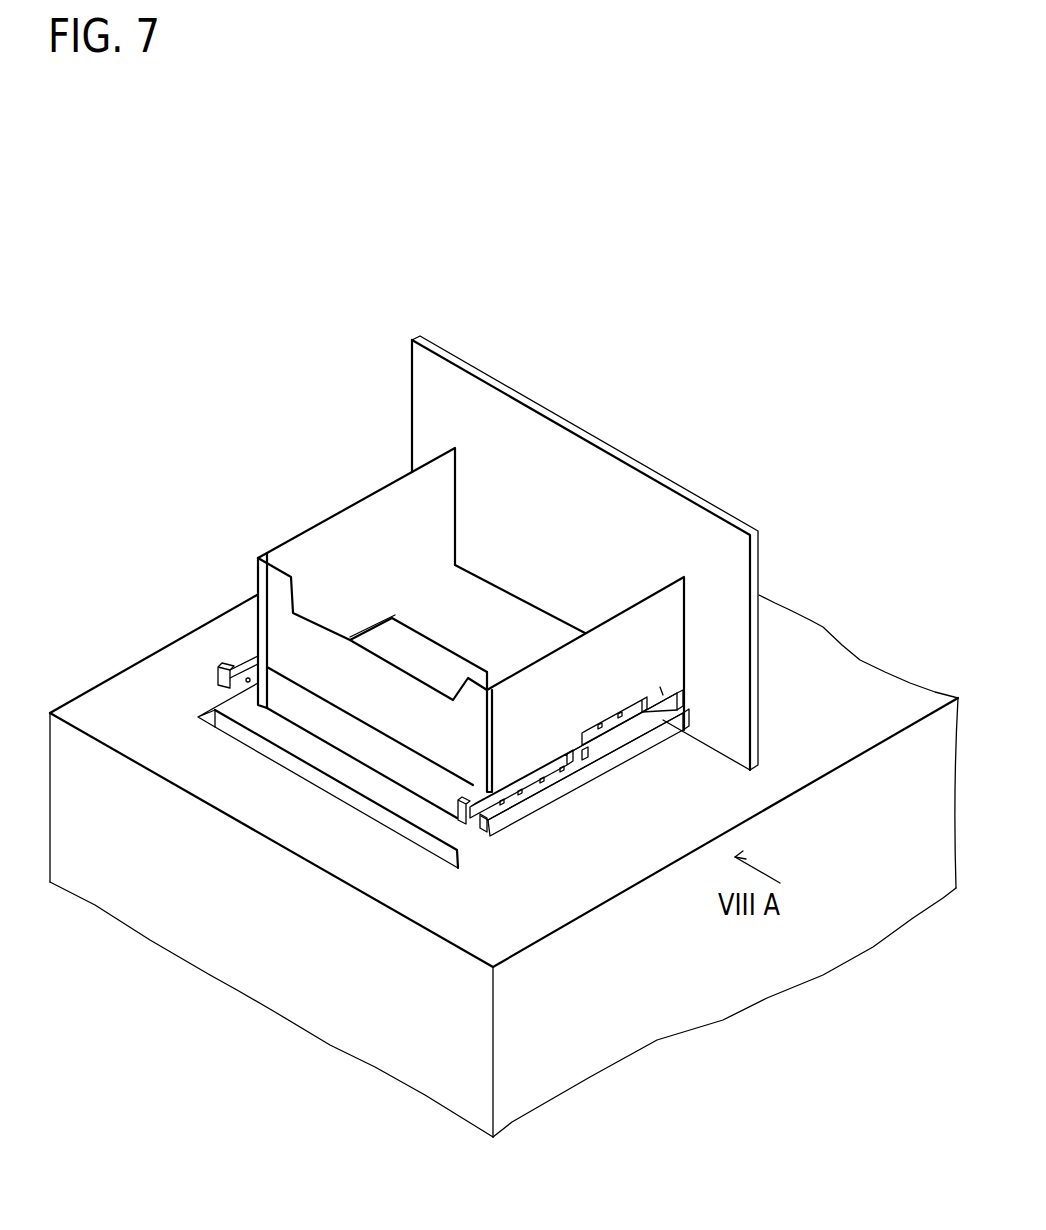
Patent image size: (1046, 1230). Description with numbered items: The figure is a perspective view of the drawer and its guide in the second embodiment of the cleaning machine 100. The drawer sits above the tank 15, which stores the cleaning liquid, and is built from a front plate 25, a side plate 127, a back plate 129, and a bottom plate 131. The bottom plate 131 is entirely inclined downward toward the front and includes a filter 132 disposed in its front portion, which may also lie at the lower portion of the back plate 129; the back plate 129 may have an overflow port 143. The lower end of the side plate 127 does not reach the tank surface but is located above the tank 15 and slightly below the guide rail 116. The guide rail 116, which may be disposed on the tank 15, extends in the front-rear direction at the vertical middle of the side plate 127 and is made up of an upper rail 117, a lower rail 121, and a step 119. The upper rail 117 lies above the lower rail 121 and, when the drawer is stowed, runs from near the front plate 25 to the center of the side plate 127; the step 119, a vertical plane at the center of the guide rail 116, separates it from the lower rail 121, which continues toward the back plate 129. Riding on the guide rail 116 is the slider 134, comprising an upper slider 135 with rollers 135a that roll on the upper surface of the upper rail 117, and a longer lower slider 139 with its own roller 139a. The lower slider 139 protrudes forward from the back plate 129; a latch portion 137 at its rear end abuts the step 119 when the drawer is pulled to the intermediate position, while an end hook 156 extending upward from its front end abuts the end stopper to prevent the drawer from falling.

The cleaning machine 100 is at (918, 301).
The tank 15 is at (168, 643).
The front plate 25 is at (758, 562).
The side plate 127 is at (519, 608).
The back plate 129 is at (255, 577).
The bottom plate 131 is at (473, 575).
The filter 132 is at (405, 623).
The slider 134 is at (672, 540).
The upper slider 135 is at (625, 689).
The roller 135a is at (620, 727).
The latch portion 137 is at (574, 745).
The lower slider 139 is at (521, 719).
The roller 139a is at (480, 817).
The overflow port 143 is at (400, 665).
The end hook 156 is at (218, 673).
The guide rail 116 is at (707, 972).
The upper rail 117 is at (662, 690).
The step 119 is at (583, 763).
The lower rail 121 is at (517, 810).